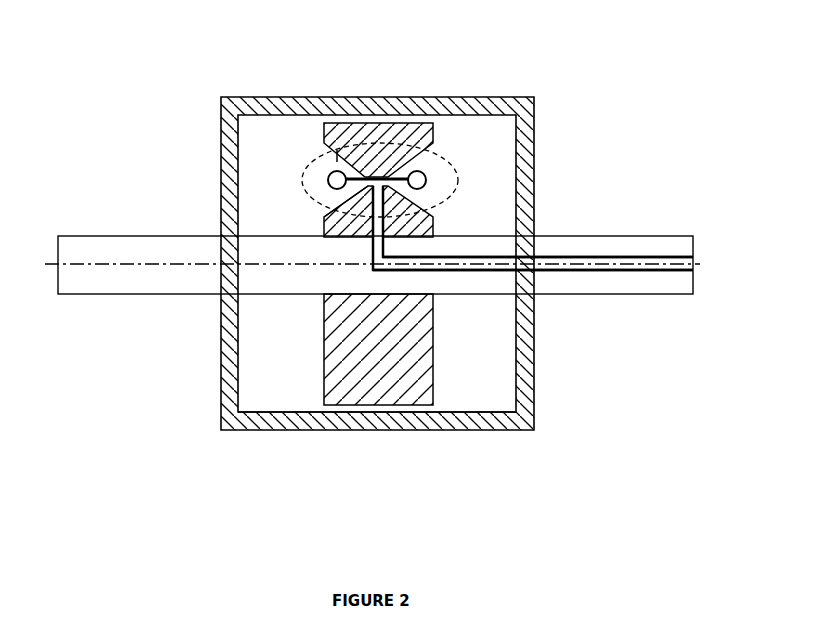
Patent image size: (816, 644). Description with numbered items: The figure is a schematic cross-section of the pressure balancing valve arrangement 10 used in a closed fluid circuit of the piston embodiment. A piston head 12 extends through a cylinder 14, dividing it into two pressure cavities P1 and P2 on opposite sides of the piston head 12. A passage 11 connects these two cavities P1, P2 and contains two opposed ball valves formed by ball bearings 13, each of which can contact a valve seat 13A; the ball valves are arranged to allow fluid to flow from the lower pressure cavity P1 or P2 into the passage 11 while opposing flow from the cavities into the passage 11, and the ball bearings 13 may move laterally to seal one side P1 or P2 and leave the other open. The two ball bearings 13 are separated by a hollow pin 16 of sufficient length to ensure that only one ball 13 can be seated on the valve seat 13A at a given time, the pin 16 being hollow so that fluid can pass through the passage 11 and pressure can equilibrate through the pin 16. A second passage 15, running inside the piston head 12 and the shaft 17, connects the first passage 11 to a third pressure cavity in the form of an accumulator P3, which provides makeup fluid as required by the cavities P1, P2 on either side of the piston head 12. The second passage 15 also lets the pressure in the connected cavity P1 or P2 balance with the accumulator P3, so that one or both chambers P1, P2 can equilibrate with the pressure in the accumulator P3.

The pressure balancing valve arrangement 10 is at (448, 154).
The passage 11 is at (377, 177).
The piston head 12 is at (401, 140).
The ball bearings 13 is at (337, 171).
The valve seat 13A is at (326, 155).
The cylinder 14 is at (443, 423).
The second passage 15 is at (383, 199).
The hollow pin 16 is at (362, 190).
The shaft 17 is at (117, 288).
The pressure cavity P1 is at (289, 180).
The pressure cavity P2 is at (483, 180).
The accumulator P3 is at (638, 257).